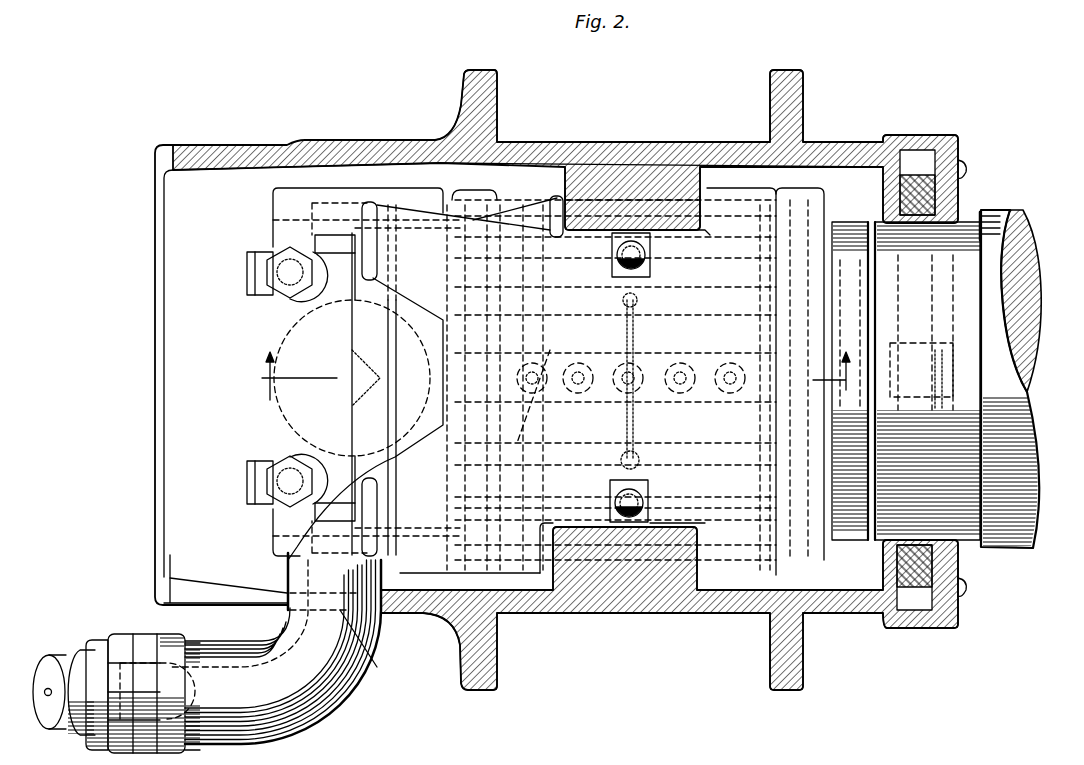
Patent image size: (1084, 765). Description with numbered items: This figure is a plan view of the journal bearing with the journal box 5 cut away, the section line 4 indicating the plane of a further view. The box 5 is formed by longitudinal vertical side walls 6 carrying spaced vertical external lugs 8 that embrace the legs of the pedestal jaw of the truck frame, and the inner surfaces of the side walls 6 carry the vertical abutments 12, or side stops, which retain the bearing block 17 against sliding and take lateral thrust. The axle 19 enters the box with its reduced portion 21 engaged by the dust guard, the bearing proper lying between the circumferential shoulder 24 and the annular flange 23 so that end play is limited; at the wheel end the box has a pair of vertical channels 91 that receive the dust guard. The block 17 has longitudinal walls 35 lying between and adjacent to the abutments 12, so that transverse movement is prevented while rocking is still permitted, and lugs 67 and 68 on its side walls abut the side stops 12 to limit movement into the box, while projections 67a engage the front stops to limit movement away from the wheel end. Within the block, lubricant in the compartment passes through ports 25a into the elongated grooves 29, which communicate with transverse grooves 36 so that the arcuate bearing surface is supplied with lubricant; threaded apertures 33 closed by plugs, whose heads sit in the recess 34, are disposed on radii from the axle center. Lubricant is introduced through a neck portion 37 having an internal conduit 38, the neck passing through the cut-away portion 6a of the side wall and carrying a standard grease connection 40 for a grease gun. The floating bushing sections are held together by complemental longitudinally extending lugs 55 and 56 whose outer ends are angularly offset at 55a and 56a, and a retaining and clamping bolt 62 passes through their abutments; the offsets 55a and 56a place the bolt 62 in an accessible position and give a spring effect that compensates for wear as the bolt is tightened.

The section line 4- 4 is at (549, 376).
The journal box 5 is at (320, 168).
The longitudinal vertical side walls 6 is at (398, 142).
The cut-away portion of the side of the box 6a is at (208, 580).
The vertical external lugs 8 is at (497, 90).
The vertical abutments 12 is at (627, 195).
The bearing block 17 is at (543, 250).
The axle 19 is at (1000, 212).
The reduced portion of the axle 21 is at (950, 293).
The annular flange 23 is at (357, 322).
The circumferential shoulder 24 is at (870, 270).
The ports 25a is at (640, 302).
The elongated groove 29 is at (542, 305).
The threaded apertures 33 is at (620, 255).
The recess 34 is at (650, 277).
The longitudinal walls of the block 35 is at (660, 238).
The transverse grooves 36 is at (625, 413).
The neck portion 37 is at (370, 670).
The internal conduit 38 is at (307, 693).
The grease connection 40 is at (80, 710).
The longitudinally extending lug 55 is at (283, 214).
The angular offset 55a is at (313, 258).
The longitudinally extending lug 56 is at (295, 195).
The angular offset 56a is at (305, 292).
The retaining and clamping bolt 62 is at (289, 286).
The lug 67 is at (550, 196).
The projections 67a is at (403, 379).
The lug 68 is at (545, 560).
The vertical channels 91 is at (918, 160).